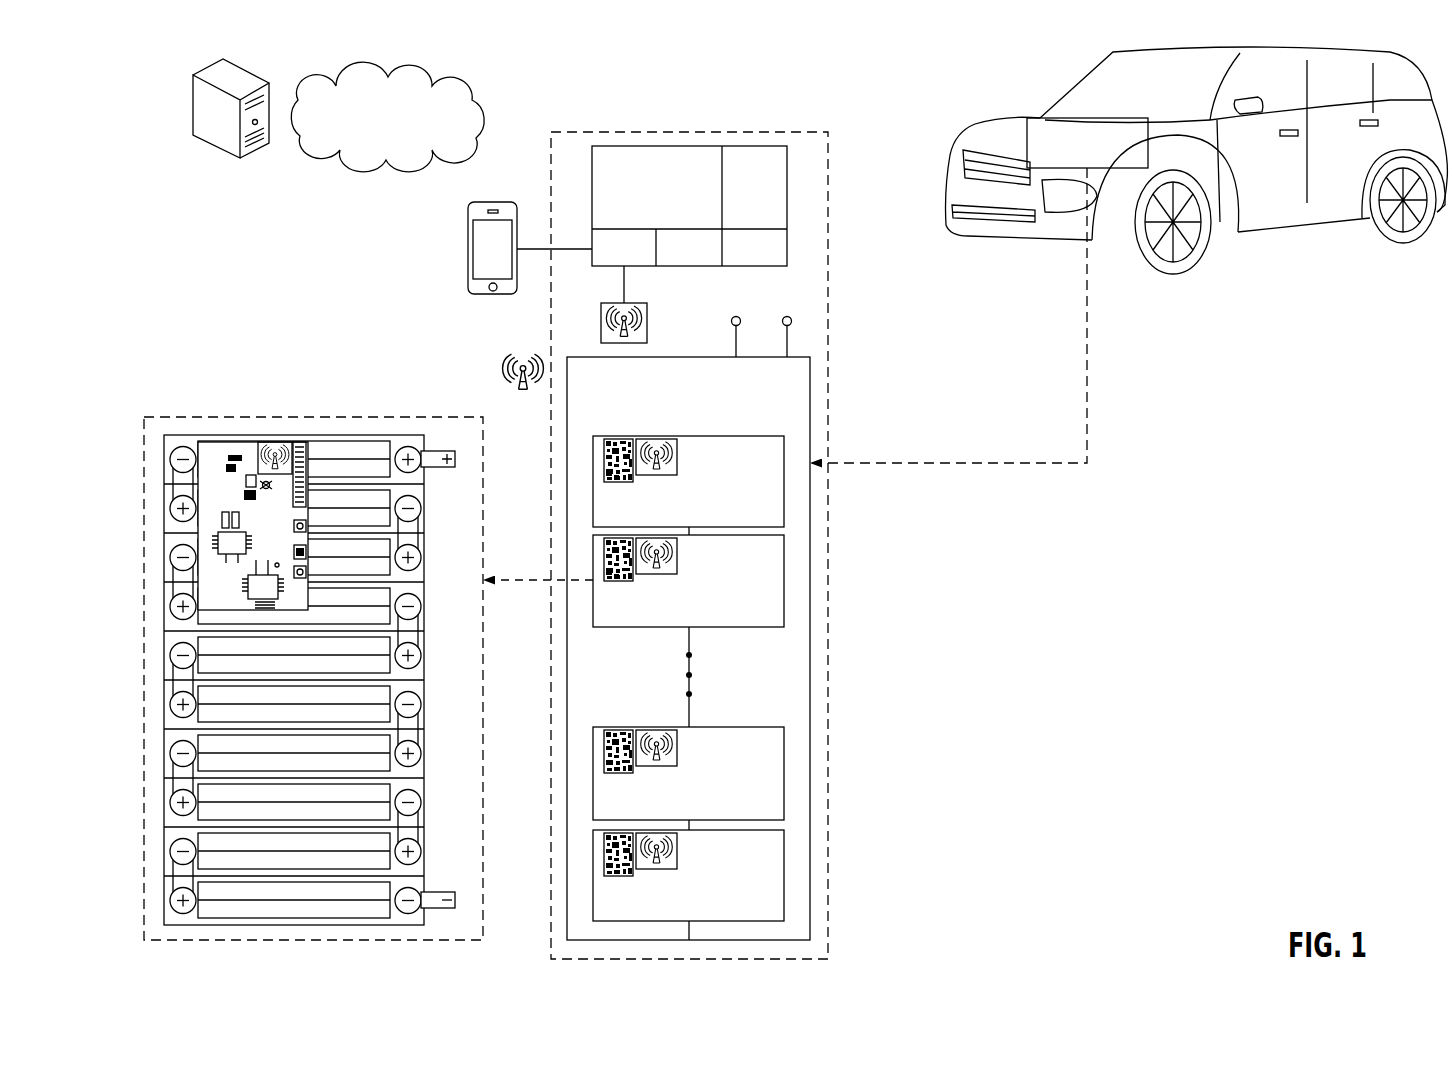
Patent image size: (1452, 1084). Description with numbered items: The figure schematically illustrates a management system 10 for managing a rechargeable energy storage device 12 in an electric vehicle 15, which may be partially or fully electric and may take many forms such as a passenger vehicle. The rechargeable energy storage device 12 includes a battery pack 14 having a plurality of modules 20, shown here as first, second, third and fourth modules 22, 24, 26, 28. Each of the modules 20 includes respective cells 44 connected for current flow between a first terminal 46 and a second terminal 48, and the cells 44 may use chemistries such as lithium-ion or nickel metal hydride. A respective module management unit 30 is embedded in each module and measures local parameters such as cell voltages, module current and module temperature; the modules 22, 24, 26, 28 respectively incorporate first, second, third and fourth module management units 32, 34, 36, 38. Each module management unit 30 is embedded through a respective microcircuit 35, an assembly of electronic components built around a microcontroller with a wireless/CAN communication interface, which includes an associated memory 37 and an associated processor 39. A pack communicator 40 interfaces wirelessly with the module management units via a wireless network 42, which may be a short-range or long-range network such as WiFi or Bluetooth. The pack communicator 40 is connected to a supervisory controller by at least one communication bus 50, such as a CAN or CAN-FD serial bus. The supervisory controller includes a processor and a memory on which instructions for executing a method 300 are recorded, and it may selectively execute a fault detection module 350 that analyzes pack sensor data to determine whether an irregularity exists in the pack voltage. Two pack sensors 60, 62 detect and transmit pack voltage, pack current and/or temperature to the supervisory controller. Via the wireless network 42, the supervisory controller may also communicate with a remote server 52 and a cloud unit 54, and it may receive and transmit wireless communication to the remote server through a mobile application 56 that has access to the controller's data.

The management system 10 is at (688, 86).
The rechargeable energy storage device 12 is at (807, 350).
The battery pack 14 is at (840, 413).
The electric vehicle 15 is at (957, 100).
The modules 20 is at (787, 575).
The first module 22 is at (784, 481).
The second module 24 is at (784, 583).
The third module 26 is at (784, 775).
The fourth module 28 is at (784, 875).
The module management unit 30 is at (635, 584).
The first module management unit 32 is at (693, 457).
The second module management unit 34 is at (693, 557).
The microcircuit 35 is at (597, 556).
The third module management unit 36 is at (693, 747).
The memory 37 is at (620, 440).
The fourth module management unit 38 is at (693, 845).
The processor 39 is at (622, 478).
The pack communicator 40 is at (647, 323).
The wireless network 42 is at (506, 358).
The cells 44 is at (163, 557).
The first terminal 46 is at (436, 467).
The second terminal 48 is at (440, 893).
The communication bus 50 is at (622, 295).
The remote server 52 is at (200, 107).
The cloud unit 54 is at (392, 77).
The mobile application 56 is at (468, 249).
The pack sensor 60 is at (735, 316).
The pack sensor 62 is at (787, 316).
The method 300 is at (642, 264).
The fault detection module 350 is at (773, 203).